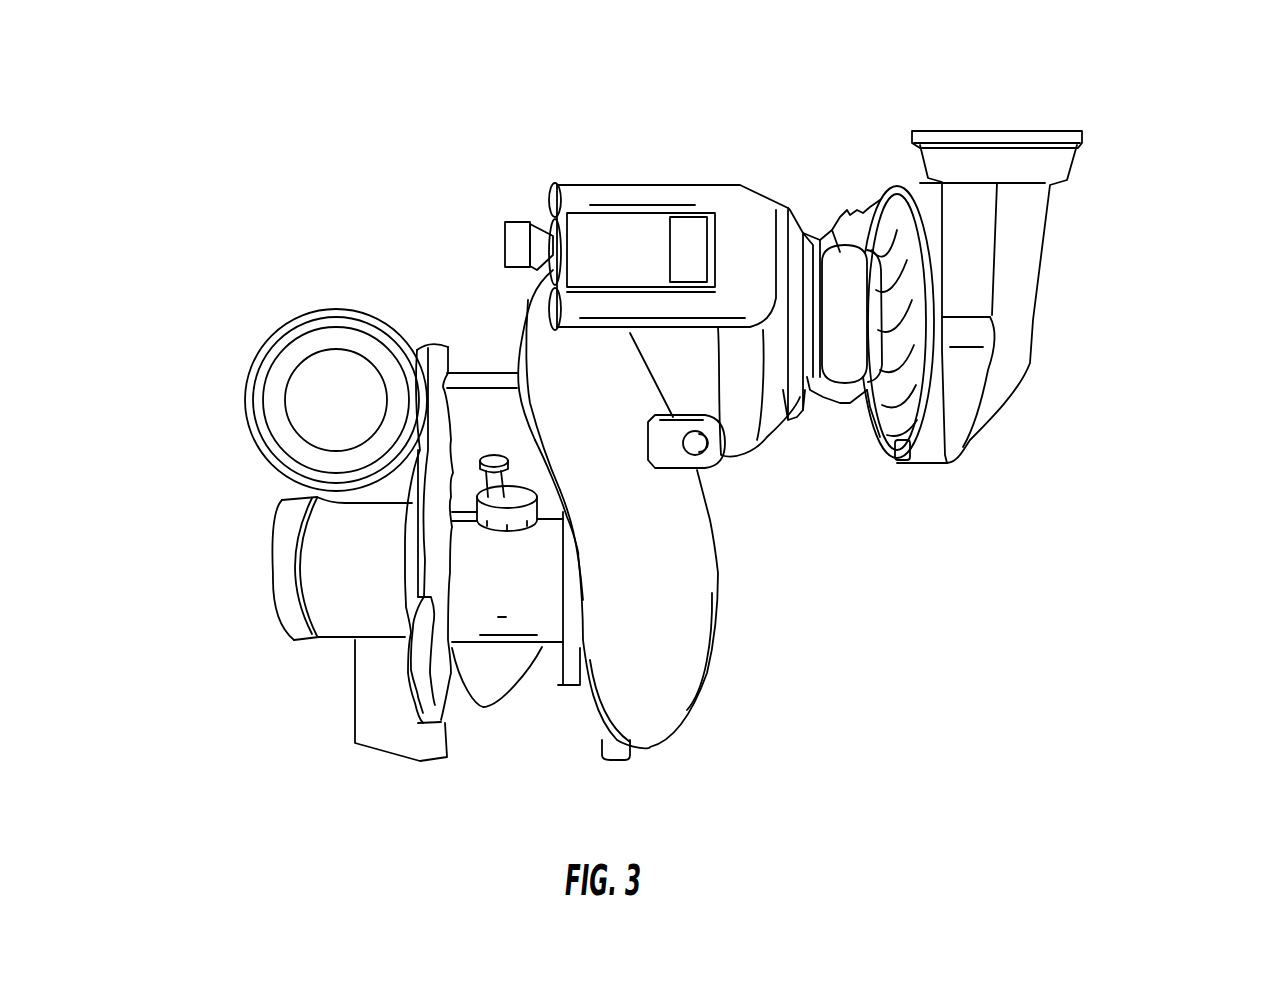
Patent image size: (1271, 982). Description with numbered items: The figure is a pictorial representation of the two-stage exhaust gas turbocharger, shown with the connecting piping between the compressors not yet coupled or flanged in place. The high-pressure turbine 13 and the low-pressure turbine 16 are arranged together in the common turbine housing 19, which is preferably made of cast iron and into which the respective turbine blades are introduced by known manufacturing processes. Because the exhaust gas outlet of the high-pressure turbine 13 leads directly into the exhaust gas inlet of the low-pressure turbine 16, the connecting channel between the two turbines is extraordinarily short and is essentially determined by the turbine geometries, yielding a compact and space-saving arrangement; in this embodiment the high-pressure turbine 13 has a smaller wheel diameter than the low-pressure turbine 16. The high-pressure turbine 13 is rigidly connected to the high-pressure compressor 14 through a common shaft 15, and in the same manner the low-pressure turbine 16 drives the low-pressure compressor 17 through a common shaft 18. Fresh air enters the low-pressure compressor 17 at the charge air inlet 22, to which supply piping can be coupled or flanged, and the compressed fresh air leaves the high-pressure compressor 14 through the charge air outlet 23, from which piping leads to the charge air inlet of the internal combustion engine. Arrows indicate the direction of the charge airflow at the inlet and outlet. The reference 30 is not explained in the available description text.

The high-pressure turbine 13 is at (837, 58).
The high-pressure compressor 14 is at (1215, 292).
The common shaft 15 is at (480, 842).
The low-pressure turbine 16 is at (773, 842).
The low-pressure compressor 17 is at (355, 686).
The common shaft 18 is at (1218, 573).
The common turbine housing 19 is at (1017, 858).
The charge air inlet 22 is at (230, 560).
The charge air outlet 23 is at (1000, 125).
The housing wall 30 is at (513, 347).